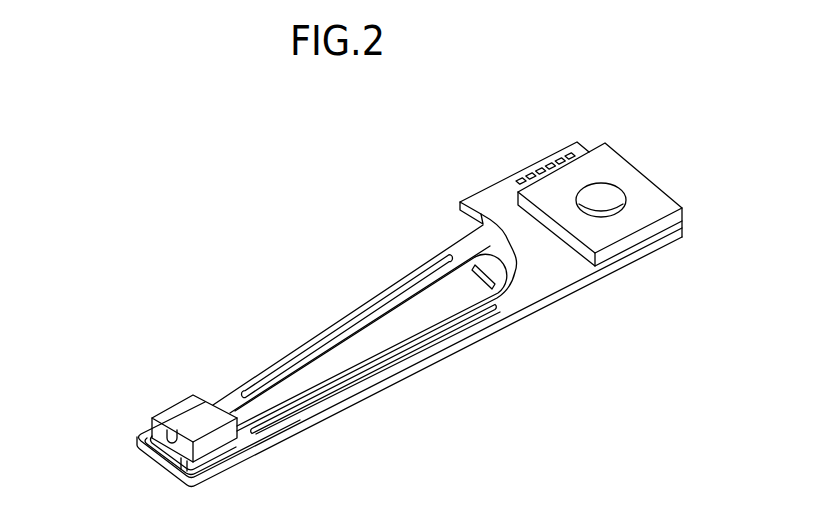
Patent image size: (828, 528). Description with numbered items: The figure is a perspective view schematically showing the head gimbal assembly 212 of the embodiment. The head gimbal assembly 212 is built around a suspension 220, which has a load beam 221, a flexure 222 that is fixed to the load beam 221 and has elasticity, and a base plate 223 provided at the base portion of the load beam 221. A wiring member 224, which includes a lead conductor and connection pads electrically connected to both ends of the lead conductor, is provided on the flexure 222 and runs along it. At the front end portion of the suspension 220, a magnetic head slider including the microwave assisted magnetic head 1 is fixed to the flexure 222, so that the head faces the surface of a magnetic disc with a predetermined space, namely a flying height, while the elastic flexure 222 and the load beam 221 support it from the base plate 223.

The microwave assisted magnetic head 1 is at (183, 413).
The head gimbal assembly 212 is at (435, 292).
The suspension 220 is at (403, 273).
The load beam 221 is at (523, 298).
The flexure 222 is at (447, 335).
The base plate 223 is at (625, 225).
The wiring member 224 is at (318, 392).